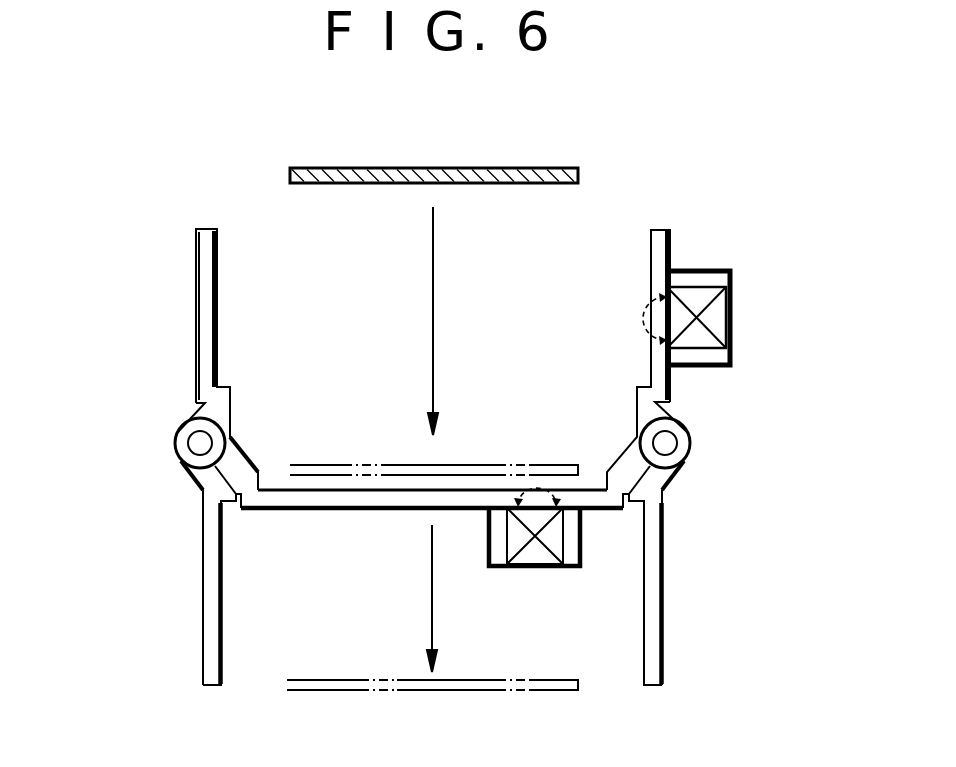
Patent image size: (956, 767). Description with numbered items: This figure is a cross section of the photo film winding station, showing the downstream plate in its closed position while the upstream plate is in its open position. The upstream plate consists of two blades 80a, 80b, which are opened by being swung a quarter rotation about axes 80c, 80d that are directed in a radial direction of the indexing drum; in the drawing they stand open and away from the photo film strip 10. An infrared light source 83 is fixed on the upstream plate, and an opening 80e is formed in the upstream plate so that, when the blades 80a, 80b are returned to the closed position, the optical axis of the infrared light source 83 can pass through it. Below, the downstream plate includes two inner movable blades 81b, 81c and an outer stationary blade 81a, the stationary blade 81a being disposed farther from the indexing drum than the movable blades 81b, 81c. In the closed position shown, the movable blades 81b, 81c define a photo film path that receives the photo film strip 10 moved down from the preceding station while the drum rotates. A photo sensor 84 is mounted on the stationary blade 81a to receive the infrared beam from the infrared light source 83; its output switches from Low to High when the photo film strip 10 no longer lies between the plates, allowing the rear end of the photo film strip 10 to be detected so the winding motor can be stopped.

The photo film strip 10 is at (432, 168).
The blade 80a is at (670, 250).
The blade 80b is at (196, 255).
The axis 80c is at (693, 448).
The axis 80d is at (195, 435).
The opening 80e is at (653, 323).
The stationary blade 81a is at (517, 500).
The movable blade 81b is at (207, 565).
The movable blade 81c is at (656, 565).
The infrared light source 83 is at (723, 322).
The photo sensor 84 is at (535, 558).